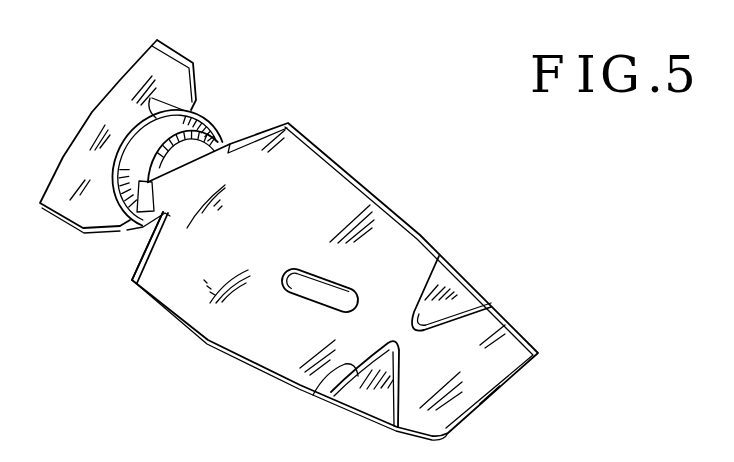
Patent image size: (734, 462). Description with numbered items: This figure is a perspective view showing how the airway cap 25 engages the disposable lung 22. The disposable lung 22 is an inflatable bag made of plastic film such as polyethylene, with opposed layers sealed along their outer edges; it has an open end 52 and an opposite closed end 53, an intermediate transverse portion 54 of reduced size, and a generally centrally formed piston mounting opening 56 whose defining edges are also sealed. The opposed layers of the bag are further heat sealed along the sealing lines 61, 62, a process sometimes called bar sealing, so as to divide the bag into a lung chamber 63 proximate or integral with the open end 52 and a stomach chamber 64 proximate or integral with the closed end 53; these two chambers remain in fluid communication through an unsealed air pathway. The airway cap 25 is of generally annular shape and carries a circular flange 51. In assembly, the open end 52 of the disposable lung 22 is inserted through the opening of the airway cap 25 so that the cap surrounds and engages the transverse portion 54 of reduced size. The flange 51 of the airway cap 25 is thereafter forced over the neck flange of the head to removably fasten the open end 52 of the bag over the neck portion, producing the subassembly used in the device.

The disposable lung 22 is at (342, 160).
The airway cap 25 is at (184, 124).
The circular flange 51 is at (152, 98).
The open end 52 is at (97, 113).
The closed end 53 is at (487, 403).
The intermediate transverse portion 54 is at (130, 235).
The piston mounting opening 56 is at (323, 290).
The sealing line 61 is at (425, 278).
The sealing line 62 is at (312, 385).
The lung chamber 63 is at (233, 207).
The stomach chamber 64 is at (490, 351).